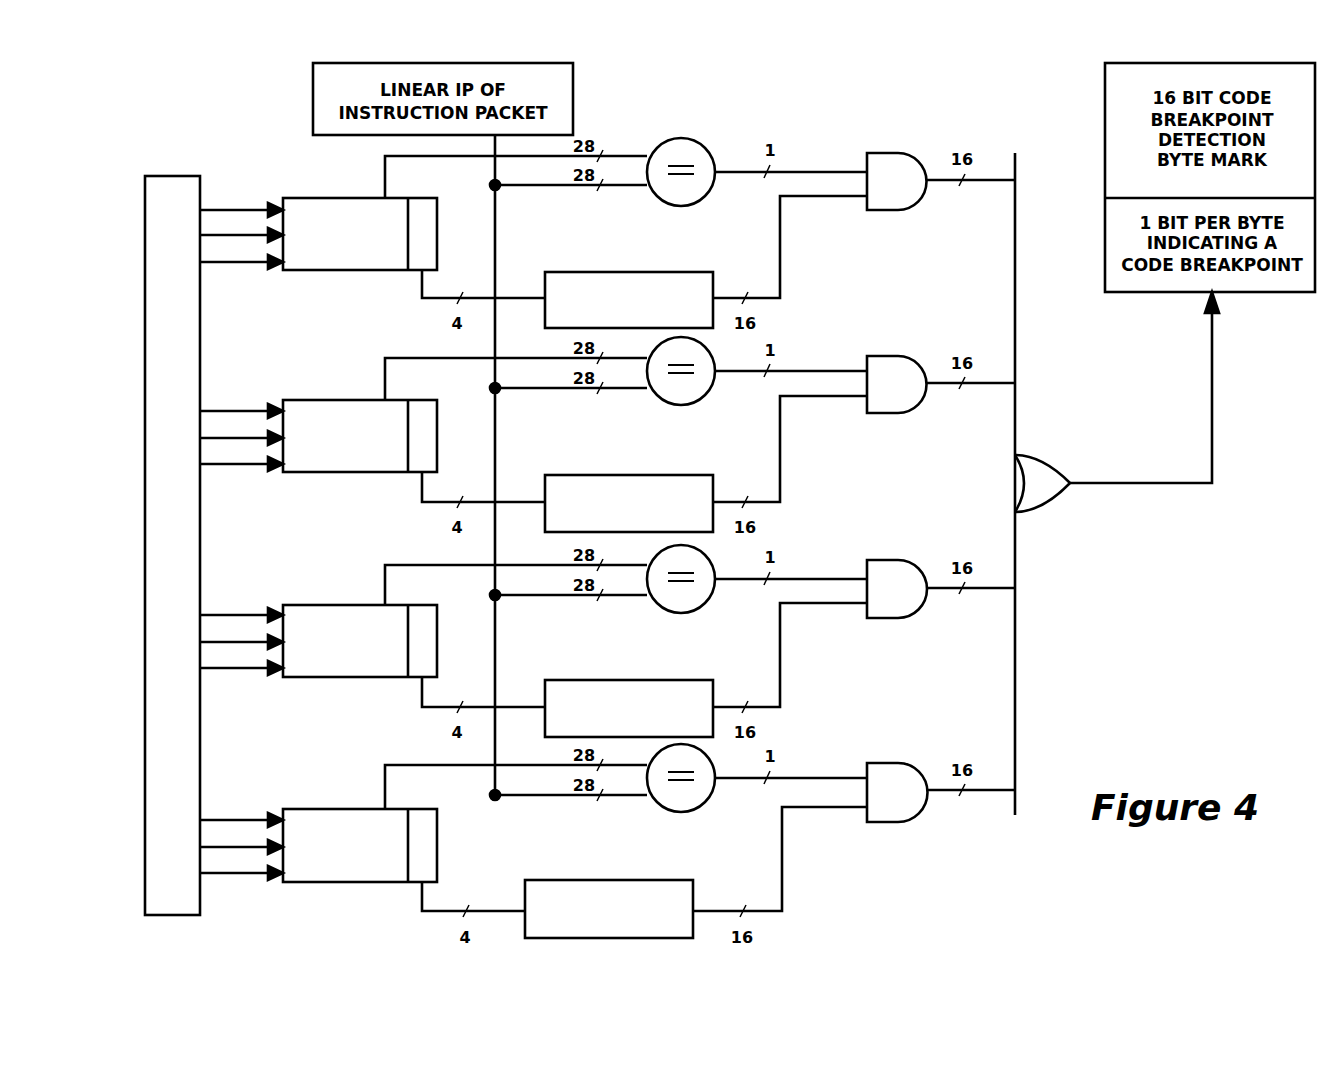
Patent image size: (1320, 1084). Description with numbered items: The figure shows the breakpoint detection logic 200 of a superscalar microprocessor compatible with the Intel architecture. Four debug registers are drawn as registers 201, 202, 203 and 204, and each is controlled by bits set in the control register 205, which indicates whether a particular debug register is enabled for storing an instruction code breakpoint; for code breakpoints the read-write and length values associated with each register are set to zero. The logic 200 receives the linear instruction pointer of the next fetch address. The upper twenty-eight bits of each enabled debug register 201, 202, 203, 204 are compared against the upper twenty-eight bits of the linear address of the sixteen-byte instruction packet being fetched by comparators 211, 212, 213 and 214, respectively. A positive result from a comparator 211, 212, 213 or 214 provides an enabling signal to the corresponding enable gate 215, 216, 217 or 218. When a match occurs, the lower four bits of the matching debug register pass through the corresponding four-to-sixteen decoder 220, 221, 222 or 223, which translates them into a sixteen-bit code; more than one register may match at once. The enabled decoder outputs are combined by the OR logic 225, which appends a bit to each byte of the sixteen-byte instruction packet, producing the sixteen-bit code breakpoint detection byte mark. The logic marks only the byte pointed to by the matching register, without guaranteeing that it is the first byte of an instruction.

The breakpoint detection logic 200 is at (985, 84).
The debug register DR0 201 is at (345, 272).
The debug register DR1 202 is at (345, 474).
The debug register DR2 203 is at (345, 679).
The debug register DR3 204 is at (345, 884).
The DR7 control register 205 is at (186, 176).
The comparator 211 is at (670, 138).
The comparator 212 is at (668, 404).
The comparator 213 is at (668, 612).
The comparator 214 is at (666, 811).
The enable gate 215 is at (893, 152).
The enable gate 216 is at (890, 355).
The enable gate 217 is at (890, 559).
The enable gate 218 is at (890, 762).
The 4:16 decoder 220 is at (572, 271).
The 4:16 decoder 221 is at (572, 474).
The 4:16 decoder 222 is at (572, 679).
The 4:16 decoder 223 is at (552, 879).
The OR logic 225 is at (1043, 514).